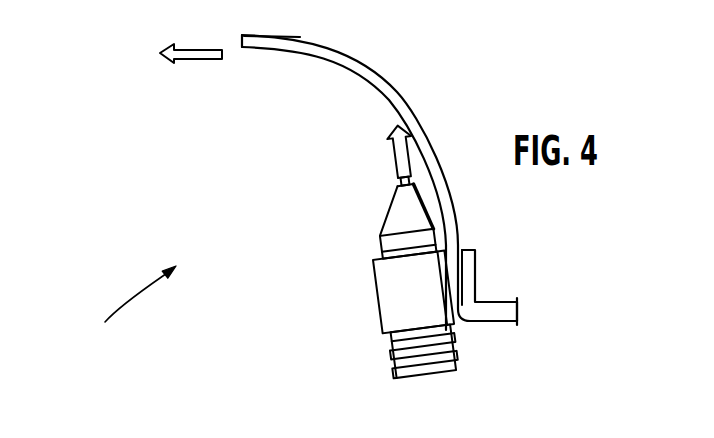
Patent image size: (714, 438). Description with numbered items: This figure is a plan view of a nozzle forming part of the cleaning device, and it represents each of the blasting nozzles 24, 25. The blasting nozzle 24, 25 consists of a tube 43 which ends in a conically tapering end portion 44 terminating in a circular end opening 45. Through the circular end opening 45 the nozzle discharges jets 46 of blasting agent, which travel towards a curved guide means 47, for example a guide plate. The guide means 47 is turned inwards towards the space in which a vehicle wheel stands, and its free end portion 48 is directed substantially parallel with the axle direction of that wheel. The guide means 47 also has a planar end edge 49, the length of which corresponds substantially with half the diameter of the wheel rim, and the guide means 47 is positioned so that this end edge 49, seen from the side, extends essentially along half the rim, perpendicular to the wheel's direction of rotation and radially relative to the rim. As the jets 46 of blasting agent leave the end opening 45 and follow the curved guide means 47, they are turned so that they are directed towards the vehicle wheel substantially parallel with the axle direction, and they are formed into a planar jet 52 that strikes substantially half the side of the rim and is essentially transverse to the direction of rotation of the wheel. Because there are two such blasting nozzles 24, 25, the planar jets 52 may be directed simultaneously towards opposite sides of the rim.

The blasting nozzle 24 is at (118, 312).
The blasting nozzle 25 is at (139, 310).
The tube 43 is at (393, 247).
The conically tapering end portion 44 is at (393, 213).
The circular end opening 45 is at (400, 176).
The jets of blasting agent 46 is at (394, 148).
The curved guide means 47 is at (422, 119).
The free end portion 48 is at (311, 36).
The planar end edge 49 is at (240, 38).
The planar jet 52 is at (195, 61).